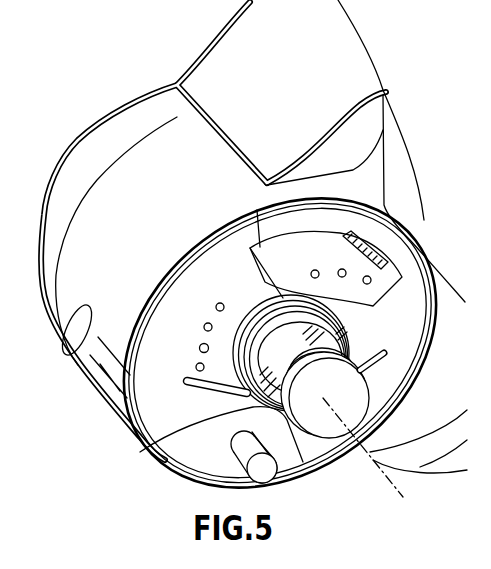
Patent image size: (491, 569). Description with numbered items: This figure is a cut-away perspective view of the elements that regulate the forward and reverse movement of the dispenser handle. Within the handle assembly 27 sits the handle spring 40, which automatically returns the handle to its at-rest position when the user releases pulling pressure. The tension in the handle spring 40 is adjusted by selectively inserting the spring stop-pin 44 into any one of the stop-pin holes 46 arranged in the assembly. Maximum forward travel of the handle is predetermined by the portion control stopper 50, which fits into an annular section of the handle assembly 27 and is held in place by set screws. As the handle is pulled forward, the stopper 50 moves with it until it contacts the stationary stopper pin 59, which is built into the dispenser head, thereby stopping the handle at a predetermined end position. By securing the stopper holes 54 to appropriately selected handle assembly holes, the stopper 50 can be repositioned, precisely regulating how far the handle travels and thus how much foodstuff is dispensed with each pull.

The handle assembly 27 is at (160, 115).
The handle spring 40 is at (156, 452).
The portion control stopper 50 is at (250, 247).
The stopper holes 54 is at (315, 270).
The stop-pin holes 46 is at (218, 304).
The spring stop-pin 44 is at (199, 346).
The stationary stopper pin 59 is at (236, 456).